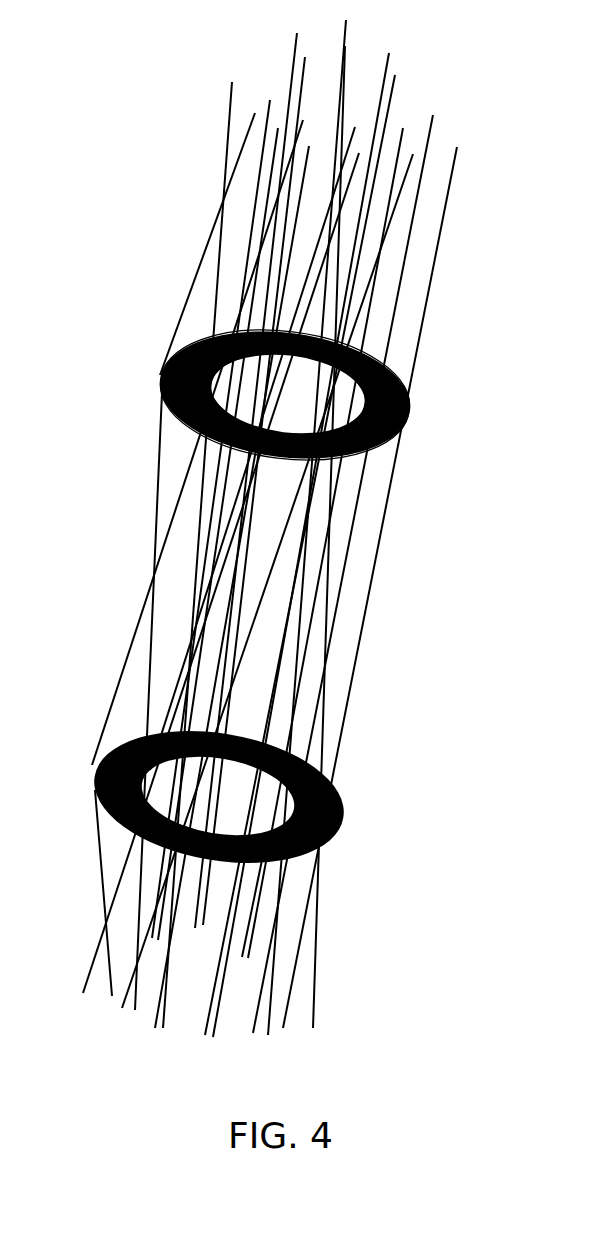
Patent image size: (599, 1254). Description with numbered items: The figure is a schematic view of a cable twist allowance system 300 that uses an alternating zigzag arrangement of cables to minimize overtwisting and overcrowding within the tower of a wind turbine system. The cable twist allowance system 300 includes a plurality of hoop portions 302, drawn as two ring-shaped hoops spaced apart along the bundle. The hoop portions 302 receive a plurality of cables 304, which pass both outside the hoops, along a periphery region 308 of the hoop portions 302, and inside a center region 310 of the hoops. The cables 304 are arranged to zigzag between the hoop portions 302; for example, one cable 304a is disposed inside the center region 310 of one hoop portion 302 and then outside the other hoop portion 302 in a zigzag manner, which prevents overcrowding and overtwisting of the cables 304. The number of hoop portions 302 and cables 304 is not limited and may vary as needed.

The cable twist allowance system 300 is at (289, 528).
The hoop portion 302 is at (316, 596).
The cables 304 is at (301, 528).
The cable 304a is at (390, 332).
The periphery region 308 is at (420, 425).
The center region 310 is at (228, 392).